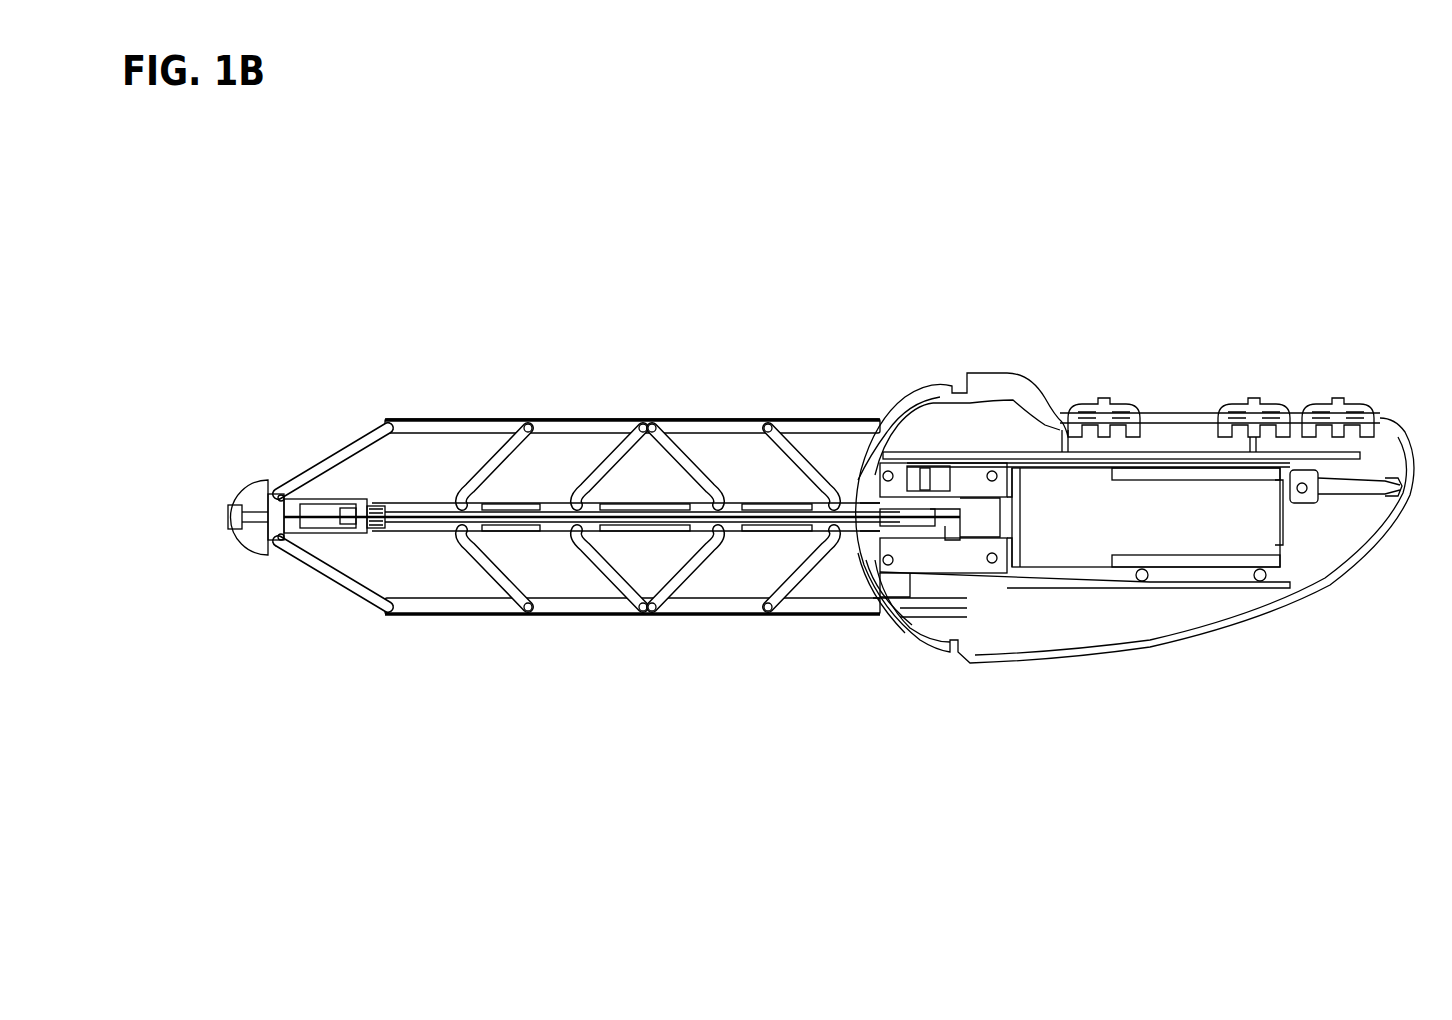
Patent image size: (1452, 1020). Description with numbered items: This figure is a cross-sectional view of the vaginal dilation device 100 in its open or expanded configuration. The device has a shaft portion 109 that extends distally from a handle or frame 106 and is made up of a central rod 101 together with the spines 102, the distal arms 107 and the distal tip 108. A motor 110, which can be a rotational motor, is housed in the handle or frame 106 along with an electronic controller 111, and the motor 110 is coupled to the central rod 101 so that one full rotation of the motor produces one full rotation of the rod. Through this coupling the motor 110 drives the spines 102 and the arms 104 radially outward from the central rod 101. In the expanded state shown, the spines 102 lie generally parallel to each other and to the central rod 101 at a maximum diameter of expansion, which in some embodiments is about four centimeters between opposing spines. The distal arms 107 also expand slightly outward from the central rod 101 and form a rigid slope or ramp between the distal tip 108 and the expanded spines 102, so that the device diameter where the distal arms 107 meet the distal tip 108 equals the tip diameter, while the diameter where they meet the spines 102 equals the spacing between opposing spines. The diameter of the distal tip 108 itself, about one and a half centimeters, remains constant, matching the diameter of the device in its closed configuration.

The vaginal dilation device 100 is at (1058, 248).
The central rod 101 is at (840, 536).
The spines 102 is at (466, 408).
The arms 104 is at (763, 427).
The handle or frame 106 is at (1221, 317).
The distal arms 107 is at (300, 454).
The distal tip 108 is at (215, 474).
The shaft portion 109 is at (632, 261).
The motor 110 is at (1131, 531).
The electronic controller 111 is at (1365, 453).